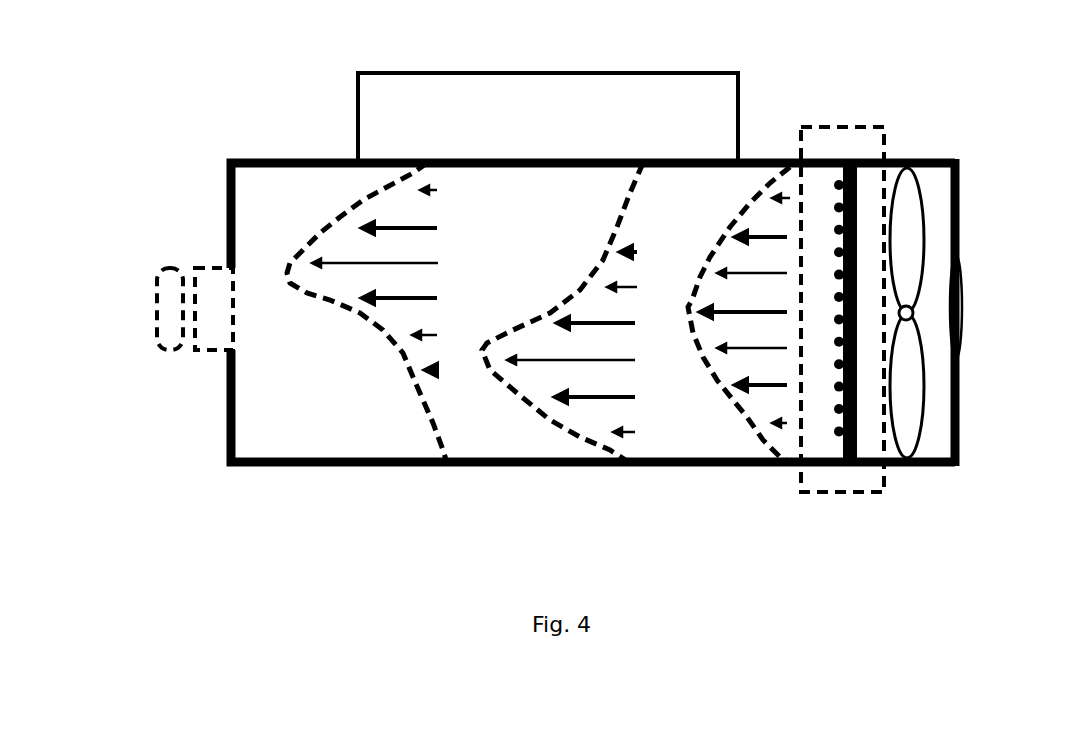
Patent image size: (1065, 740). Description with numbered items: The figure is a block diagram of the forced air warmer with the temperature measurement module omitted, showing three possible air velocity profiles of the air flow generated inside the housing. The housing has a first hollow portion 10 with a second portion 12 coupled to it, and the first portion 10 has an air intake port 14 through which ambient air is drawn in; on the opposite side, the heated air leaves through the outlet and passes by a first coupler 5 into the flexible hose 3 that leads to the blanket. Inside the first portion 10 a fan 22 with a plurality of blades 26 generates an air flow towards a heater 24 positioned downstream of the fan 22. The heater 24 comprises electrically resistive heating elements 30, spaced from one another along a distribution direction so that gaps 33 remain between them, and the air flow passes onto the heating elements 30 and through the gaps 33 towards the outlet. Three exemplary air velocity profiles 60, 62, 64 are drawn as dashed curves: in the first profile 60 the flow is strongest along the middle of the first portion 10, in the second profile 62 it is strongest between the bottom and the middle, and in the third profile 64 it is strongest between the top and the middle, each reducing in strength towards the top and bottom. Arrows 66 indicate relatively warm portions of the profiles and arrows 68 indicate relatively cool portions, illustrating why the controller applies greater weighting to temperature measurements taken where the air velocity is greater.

The flexible hose 3 is at (182, 292).
The first coupler 5 is at (212, 297).
The first housing portion 10 is at (262, 160).
The second housing portion 12 is at (510, 73).
The air intake port 14 is at (962, 315).
The fan 22 is at (935, 448).
The heater 24 is at (857, 480).
The blades 26 is at (912, 218).
The heating elements 30 is at (848, 167).
The gaps 33 is at (835, 425).
The first exemplary air velocity profile 60 is at (748, 205).
The second exemplary air velocity profile 62 is at (635, 192).
The third exemplary air velocity profile 64 is at (332, 215).
The arrows indicating relatively warm portions 66 is at (422, 225).
The arrows indicating relatively cool portions 68 is at (430, 187).